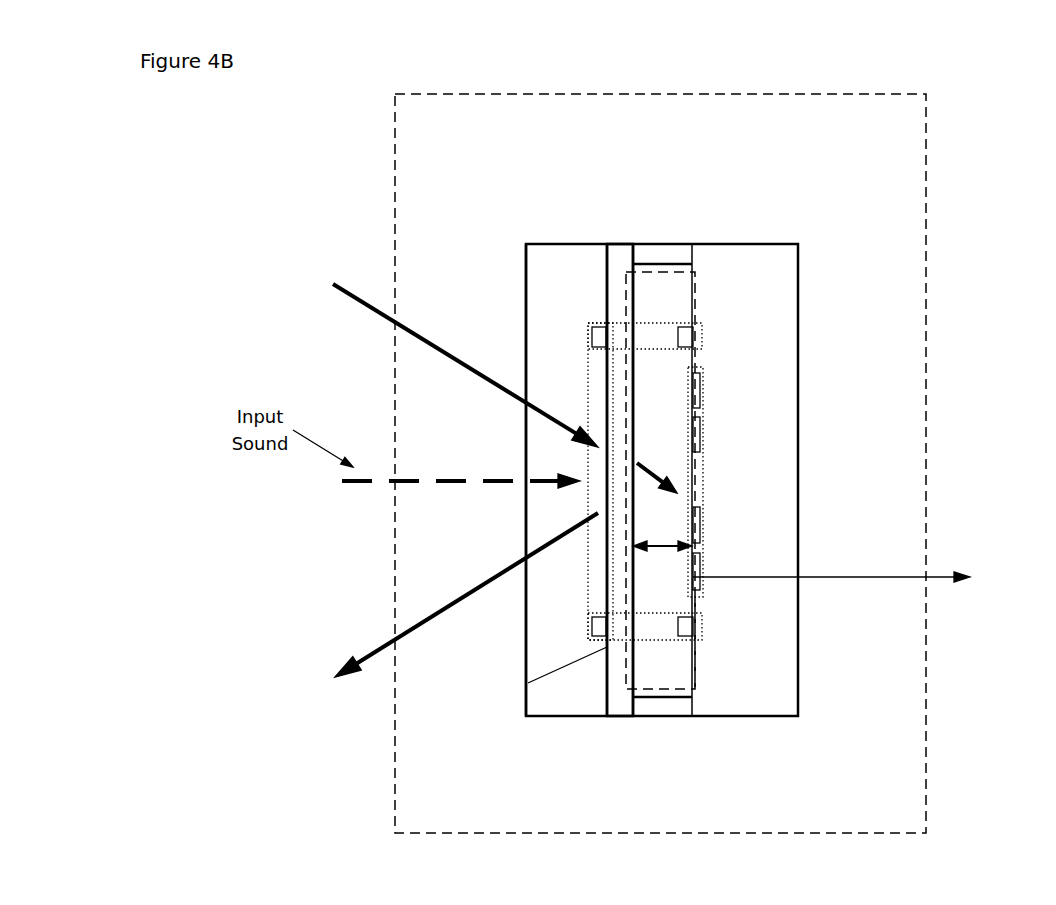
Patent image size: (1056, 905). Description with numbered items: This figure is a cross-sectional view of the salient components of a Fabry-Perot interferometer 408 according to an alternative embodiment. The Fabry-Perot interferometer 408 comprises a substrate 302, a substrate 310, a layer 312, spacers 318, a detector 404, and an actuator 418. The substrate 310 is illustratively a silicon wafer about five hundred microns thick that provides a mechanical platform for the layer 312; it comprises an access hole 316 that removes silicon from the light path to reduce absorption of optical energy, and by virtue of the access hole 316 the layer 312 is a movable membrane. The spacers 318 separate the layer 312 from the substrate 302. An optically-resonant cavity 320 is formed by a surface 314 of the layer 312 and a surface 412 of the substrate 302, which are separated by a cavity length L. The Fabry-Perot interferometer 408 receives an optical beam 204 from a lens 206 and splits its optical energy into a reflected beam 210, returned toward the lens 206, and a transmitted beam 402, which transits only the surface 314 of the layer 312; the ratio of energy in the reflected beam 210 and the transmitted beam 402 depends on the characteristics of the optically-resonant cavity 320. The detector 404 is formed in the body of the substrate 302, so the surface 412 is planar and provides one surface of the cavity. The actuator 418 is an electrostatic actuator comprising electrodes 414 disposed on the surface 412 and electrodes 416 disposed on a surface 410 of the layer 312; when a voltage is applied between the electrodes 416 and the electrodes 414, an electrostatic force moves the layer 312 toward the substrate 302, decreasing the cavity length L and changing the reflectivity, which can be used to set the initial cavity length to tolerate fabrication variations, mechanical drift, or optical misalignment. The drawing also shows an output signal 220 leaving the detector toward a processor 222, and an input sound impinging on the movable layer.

The Fabry-Perot interferometer 408 is at (652, 123).
The substrate 302 is at (791, 275).
The substrate 310 is at (565, 275).
The access hole 316 is at (527, 655).
The surface 410 is at (571, 462).
The layer 312 is at (584, 442).
The surface 314 is at (584, 480).
The spacers 318 is at (714, 459).
The optically-resonant cavity 320 is at (602, 514).
The actuator 418 is at (618, 481).
The electrodes 416 is at (570, 469).
The electrodes 414 is at (737, 469).
The detector 404 is at (742, 473).
The transmitted beam 402 is at (716, 445).
The cavity length L is at (702, 503).
The surface 412 is at (744, 643).
The output signal 220 is at (831, 557).
The processor 222 is at (985, 624).
The optical beam 204 is at (427, 365).
The reflected beam 210 is at (427, 595).
The lens 206 is at (308, 466).